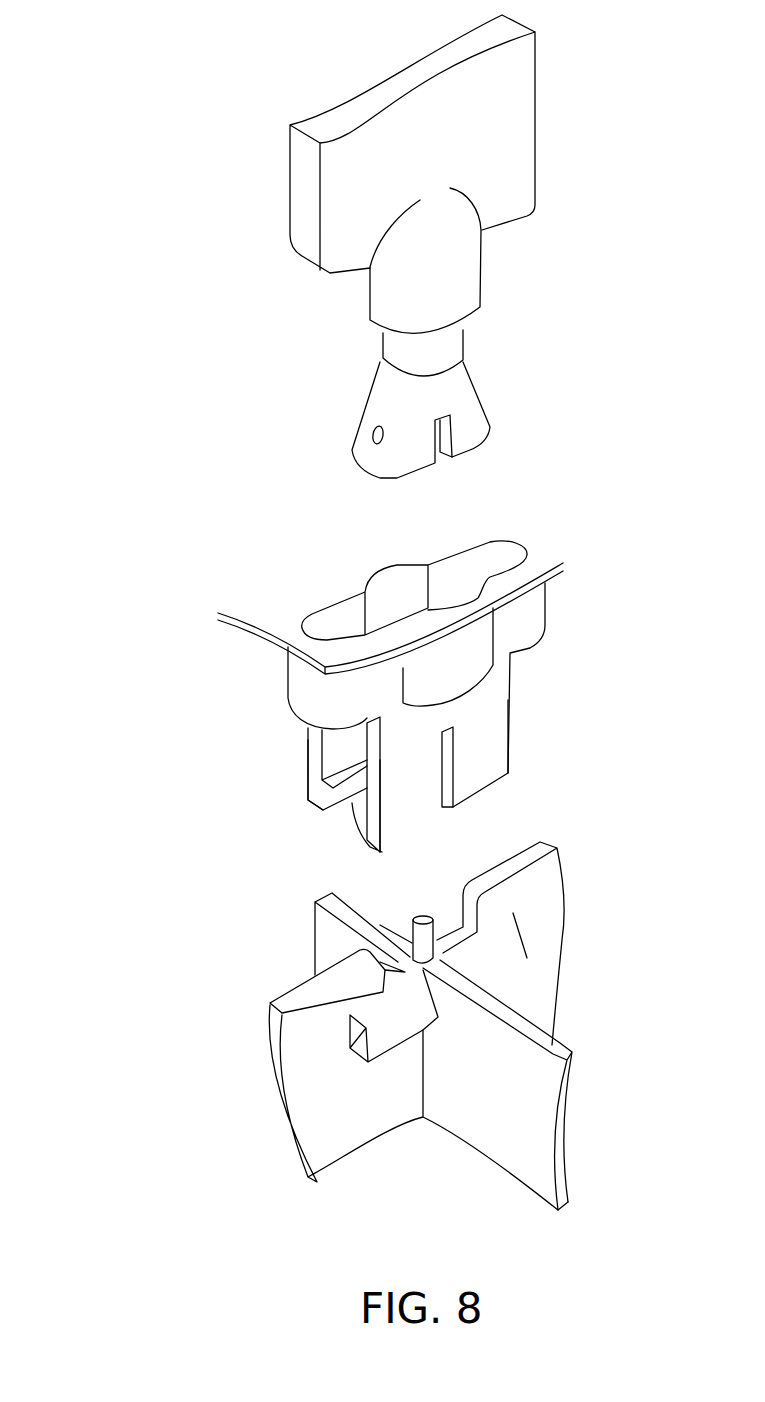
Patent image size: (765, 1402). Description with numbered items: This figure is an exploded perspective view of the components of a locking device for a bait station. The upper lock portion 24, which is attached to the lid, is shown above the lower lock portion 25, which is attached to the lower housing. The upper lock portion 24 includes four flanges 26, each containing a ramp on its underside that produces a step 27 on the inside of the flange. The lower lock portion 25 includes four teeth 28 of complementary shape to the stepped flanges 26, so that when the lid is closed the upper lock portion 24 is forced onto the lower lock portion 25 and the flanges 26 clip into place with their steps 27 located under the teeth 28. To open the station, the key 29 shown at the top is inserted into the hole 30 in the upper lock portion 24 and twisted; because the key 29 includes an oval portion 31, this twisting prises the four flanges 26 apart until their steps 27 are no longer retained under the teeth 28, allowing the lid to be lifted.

The upper lock portion 24 is at (361, 647).
The lower lock portion 25 is at (350, 1026).
The flange 26 is at (413, 813).
The step 27 is at (269, 784).
The tooth 28 is at (398, 1020).
The key 29 is at (523, 148).
The hole 30 is at (450, 587).
The oval portion 31 is at (473, 423).